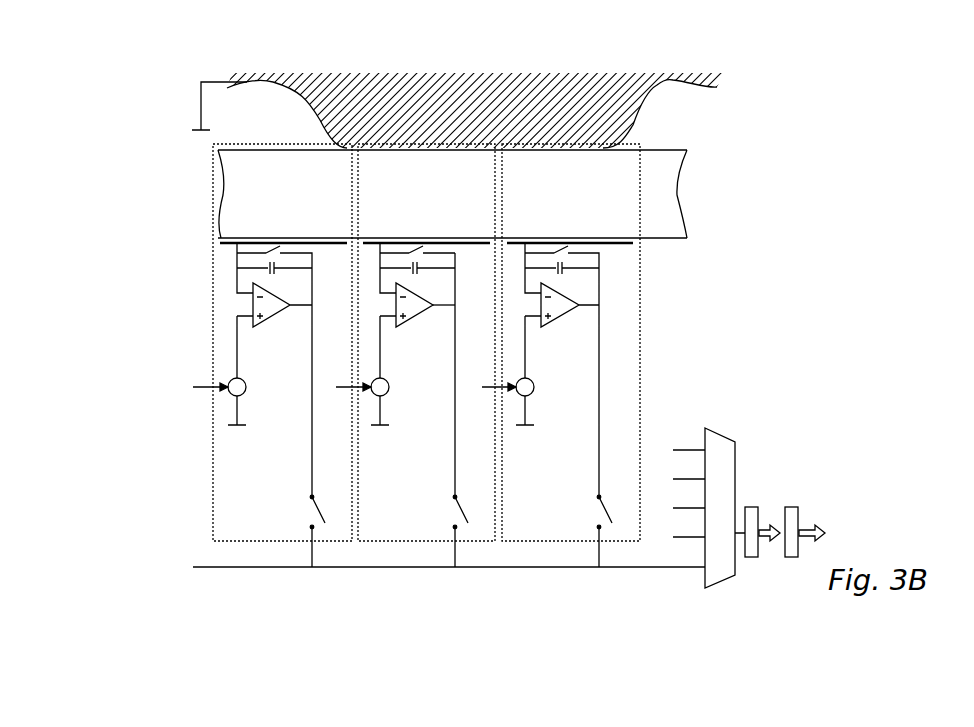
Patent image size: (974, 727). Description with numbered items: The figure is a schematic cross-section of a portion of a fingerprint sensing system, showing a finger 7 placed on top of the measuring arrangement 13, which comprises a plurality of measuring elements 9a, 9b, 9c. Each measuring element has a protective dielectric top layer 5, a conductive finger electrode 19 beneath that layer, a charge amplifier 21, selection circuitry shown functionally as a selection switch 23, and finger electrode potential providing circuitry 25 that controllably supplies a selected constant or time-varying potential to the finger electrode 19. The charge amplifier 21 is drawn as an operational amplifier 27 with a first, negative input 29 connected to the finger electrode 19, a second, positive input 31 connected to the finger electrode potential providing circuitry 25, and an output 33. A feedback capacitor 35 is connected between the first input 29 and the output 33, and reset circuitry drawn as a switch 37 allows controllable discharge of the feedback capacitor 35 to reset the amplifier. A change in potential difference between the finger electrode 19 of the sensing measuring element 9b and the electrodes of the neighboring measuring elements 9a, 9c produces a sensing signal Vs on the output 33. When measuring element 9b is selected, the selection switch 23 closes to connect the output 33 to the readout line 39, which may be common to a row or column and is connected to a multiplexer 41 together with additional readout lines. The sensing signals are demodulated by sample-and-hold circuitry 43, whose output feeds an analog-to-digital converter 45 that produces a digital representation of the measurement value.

The protective dielectric top layer 5 is at (437, 189).
The finger 7 is at (458, 104).
The measuring element 9a is at (213, 296).
The measuring element 9b is at (415, 382).
The measuring element 9c is at (640, 298).
The measuring arrangement 13 is at (503, 354).
The conductive finger electrode 19 is at (481, 250).
The charge amplifier 21 is at (415, 369).
The selection switch 23 is at (447, 505).
The finger electrode potential providing circuitry 25 is at (388, 393).
The operational amplifier 27 is at (416, 290).
The first input 29 is at (390, 297).
The second input 31 is at (393, 320).
The output 33 is at (438, 309).
The feedback capacitor 35 is at (428, 257).
The reset circuitry 37 is at (420, 252).
The readout line 39 is at (400, 567).
The multiplexer 41 is at (720, 435).
The sample-and-hold circuitry 43 is at (756, 506).
The analog-to-digital converter 45 is at (796, 506).